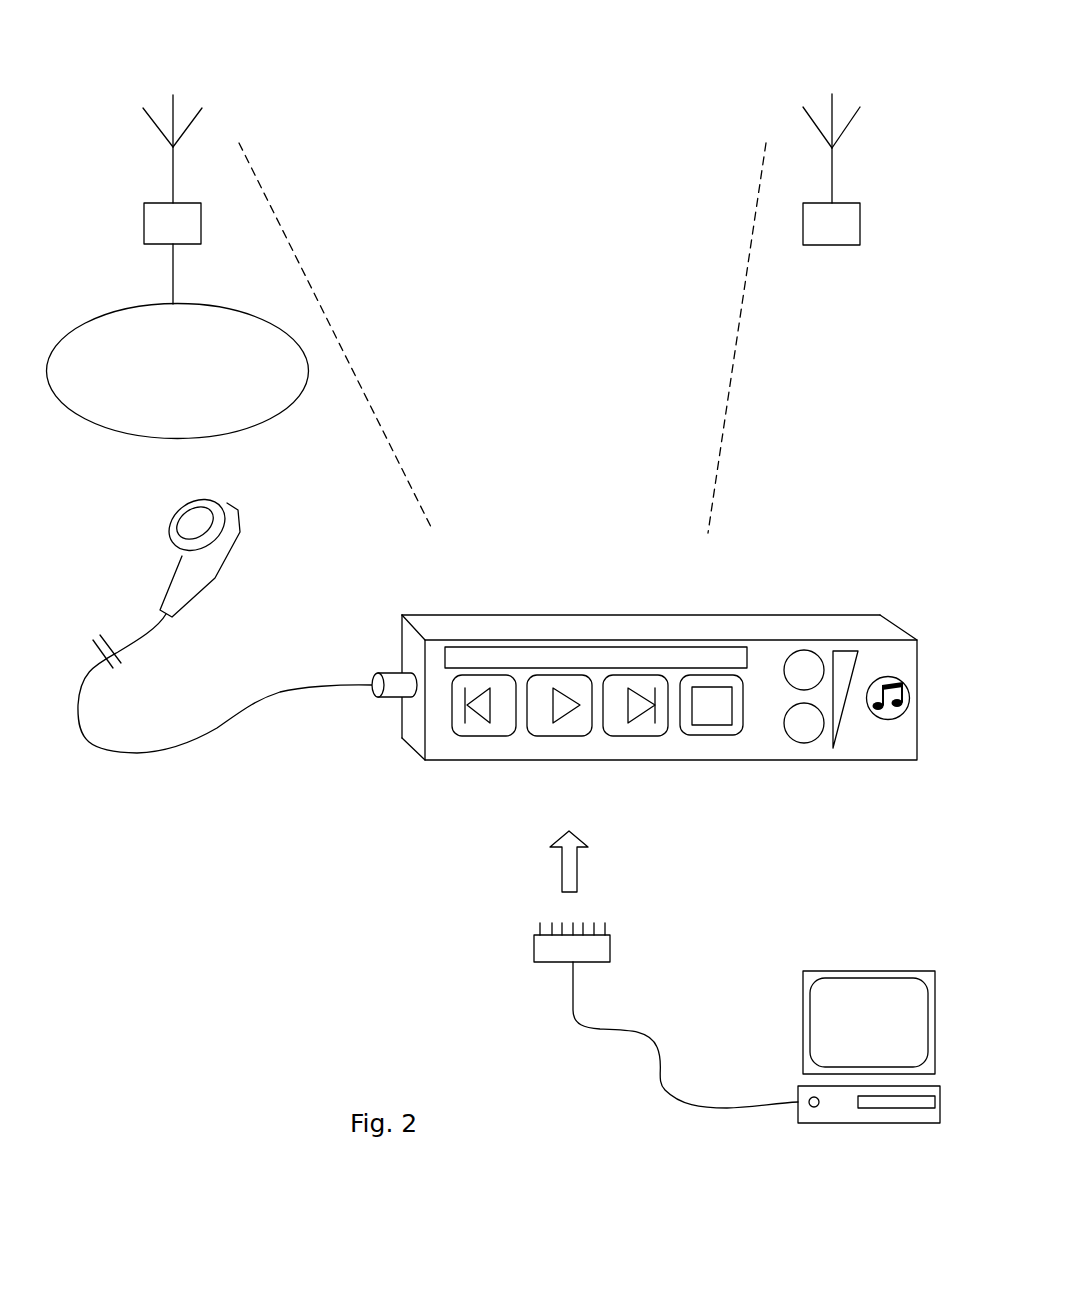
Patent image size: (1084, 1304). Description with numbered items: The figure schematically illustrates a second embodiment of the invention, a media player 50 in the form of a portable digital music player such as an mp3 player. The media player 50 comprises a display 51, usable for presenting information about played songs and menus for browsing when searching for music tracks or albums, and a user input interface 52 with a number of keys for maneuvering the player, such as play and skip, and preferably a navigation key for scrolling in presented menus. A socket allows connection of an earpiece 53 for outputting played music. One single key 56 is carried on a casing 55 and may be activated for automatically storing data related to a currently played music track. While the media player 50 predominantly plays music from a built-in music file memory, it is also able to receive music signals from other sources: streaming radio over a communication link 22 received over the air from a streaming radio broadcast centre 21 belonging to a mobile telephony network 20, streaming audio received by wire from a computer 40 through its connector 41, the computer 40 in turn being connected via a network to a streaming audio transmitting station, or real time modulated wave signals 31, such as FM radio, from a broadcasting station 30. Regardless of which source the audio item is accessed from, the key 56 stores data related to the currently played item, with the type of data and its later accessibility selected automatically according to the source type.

The mobile telephony network 20 is at (176, 387).
The streaming radio broadcast centre 21 is at (178, 82).
The communication link 22 is at (335, 313).
The broadcasting station 30 is at (808, 75).
The real time modulated wave signals 31 is at (740, 285).
The computer 40 is at (866, 971).
The connector 41 is at (603, 946).
The media player 50 is at (782, 587).
The display 51 is at (527, 653).
The user input interface 52 is at (587, 743).
The earpiece 53 is at (185, 500).
The casing 55 is at (397, 618).
The key 56 is at (883, 728).